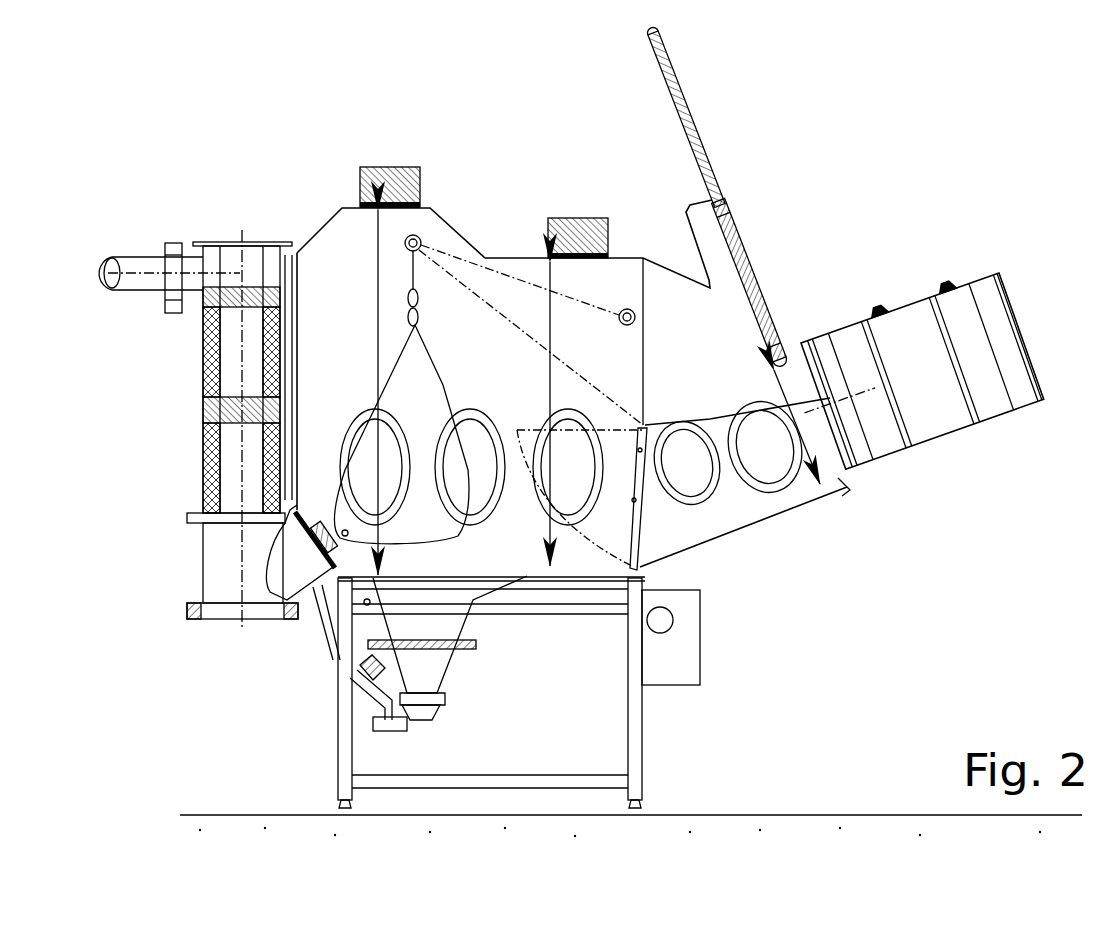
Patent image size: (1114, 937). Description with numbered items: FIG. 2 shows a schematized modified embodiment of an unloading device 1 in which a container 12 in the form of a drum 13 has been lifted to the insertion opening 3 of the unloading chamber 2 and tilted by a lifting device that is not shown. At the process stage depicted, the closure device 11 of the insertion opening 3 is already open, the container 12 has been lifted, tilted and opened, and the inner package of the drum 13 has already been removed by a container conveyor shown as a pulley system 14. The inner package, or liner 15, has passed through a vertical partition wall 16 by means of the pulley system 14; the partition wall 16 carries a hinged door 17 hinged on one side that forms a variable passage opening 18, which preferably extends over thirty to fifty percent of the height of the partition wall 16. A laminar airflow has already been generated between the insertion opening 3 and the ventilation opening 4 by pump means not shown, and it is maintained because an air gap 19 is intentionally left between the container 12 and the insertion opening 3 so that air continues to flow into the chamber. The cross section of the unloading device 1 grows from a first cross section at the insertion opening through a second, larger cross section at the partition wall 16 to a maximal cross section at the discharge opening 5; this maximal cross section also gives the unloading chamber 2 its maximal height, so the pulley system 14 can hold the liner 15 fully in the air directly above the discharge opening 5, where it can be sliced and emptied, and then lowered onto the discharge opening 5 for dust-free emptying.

The unloading device 1 is at (828, 651).
The unloading chamber 2 is at (610, 293).
The insertion opening 3 is at (782, 365).
The ventilation opening 4 is at (299, 367).
The discharge opening 5 is at (433, 577).
The closure device 11 is at (708, 173).
The container 12 is at (892, 443).
The drum 13 is at (888, 332).
The pulley system 14 is at (497, 313).
The liner 15 is at (418, 400).
The partition wall 16 is at (647, 360).
The hinged door 17 is at (635, 532).
The passage opening 18 is at (663, 508).
The air gap 19 is at (842, 480).